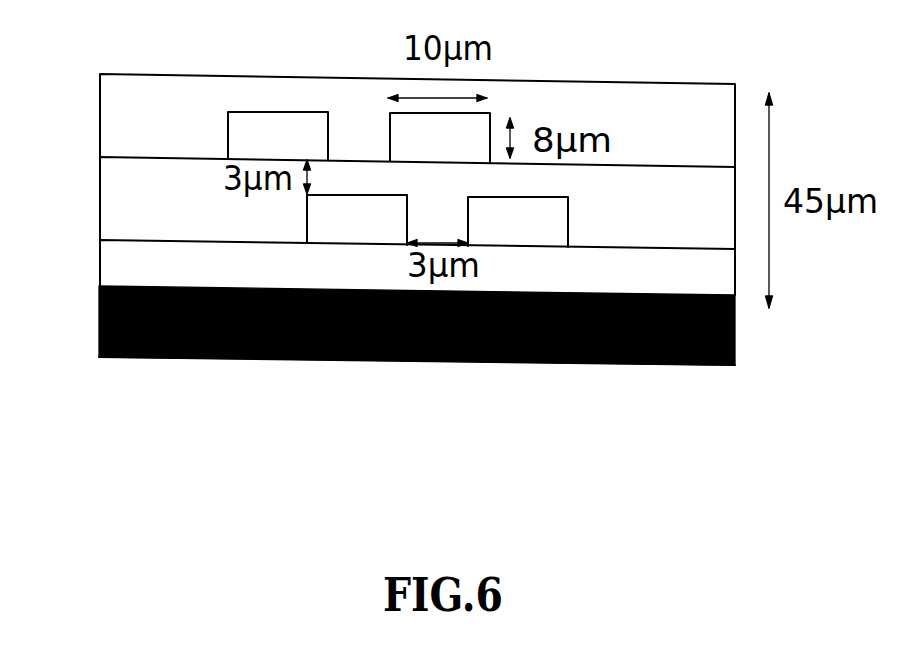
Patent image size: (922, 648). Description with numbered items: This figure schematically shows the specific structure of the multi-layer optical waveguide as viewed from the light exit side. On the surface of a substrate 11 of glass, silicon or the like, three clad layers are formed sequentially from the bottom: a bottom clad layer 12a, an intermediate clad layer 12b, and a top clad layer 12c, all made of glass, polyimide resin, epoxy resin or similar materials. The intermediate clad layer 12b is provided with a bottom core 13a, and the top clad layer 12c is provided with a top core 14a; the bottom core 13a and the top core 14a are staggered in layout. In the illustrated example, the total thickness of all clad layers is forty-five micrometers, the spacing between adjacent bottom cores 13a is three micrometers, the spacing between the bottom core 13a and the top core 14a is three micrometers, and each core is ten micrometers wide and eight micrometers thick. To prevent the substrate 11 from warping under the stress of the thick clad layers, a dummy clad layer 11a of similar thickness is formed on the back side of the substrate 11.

The substrate 11 is at (733, 346).
The dummy clad layer 11a is at (690, 366).
The bottom clad layer 12a is at (100, 268).
The intermediate clad layer 12b is at (100, 174).
The top clad layer 12c is at (140, 92).
The bottom core 13a is at (307, 221).
The top core 14a is at (228, 130).